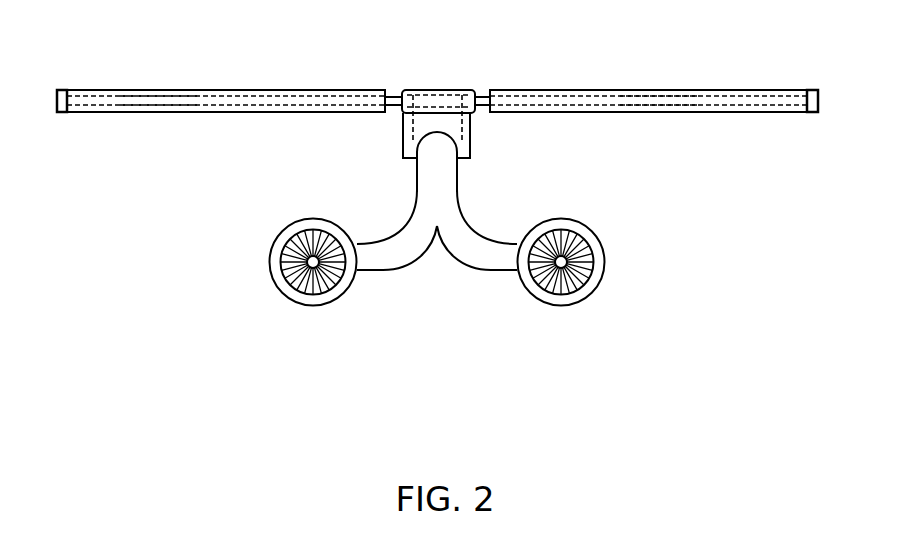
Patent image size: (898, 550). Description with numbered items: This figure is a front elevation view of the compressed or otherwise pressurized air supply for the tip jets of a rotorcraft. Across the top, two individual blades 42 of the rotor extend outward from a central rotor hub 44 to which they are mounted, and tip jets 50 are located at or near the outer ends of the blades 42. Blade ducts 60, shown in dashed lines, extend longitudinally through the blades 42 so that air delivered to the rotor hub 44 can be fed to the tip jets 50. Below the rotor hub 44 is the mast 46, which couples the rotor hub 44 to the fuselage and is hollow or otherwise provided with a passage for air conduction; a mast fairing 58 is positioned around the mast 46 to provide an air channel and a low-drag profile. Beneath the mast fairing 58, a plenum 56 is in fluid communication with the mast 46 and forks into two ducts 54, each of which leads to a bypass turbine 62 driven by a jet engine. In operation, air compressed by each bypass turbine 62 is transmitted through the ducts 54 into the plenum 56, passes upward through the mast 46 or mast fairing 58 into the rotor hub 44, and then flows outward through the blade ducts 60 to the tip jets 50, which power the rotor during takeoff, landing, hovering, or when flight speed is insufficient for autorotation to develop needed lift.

The blades 42 is at (217, 90).
The rotor hub 44 is at (436, 90).
The mast 46 is at (462, 134).
The tip jets 50 is at (56, 100).
The ducts 54 is at (393, 229).
The plenum 56 is at (452, 172).
The mast fairing 58 is at (403, 134).
The blade ducts 60 is at (155, 112).
The bypass turbine 62 is at (284, 254).